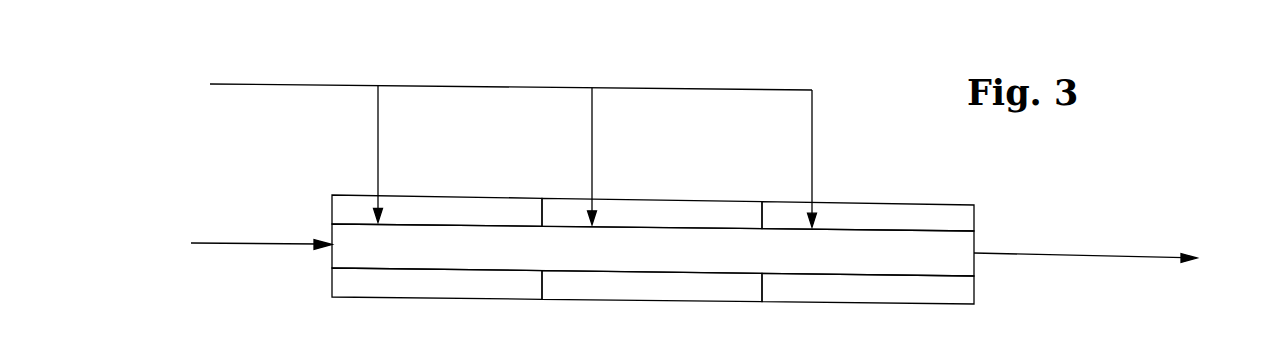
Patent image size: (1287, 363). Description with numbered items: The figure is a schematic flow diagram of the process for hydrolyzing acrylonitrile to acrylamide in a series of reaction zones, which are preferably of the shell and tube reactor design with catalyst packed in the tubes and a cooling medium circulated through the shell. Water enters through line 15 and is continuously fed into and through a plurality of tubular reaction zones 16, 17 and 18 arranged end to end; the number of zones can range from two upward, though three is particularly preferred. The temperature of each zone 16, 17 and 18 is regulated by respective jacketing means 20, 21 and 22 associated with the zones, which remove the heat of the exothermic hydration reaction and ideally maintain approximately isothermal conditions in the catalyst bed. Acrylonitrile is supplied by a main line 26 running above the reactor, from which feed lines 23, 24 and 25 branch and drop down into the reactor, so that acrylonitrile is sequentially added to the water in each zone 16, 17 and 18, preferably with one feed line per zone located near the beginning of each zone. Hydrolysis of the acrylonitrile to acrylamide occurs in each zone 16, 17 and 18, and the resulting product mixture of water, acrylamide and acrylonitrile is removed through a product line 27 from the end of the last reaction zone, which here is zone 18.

The line 15 is at (254, 243).
The tubular reaction zone 16 is at (477, 250).
The tubular reaction zone 17 is at (652, 266).
The tubular reaction zone 18 is at (870, 265).
The jacketing means 20 is at (442, 205).
The jacketing means 21 is at (660, 210).
The jacketing means 22 is at (913, 210).
The feed line 23 is at (378, 149).
The feed line 24 is at (592, 148).
The feed line 25 is at (812, 157).
The main line 26 is at (301, 86).
The product line 27 is at (1081, 257).